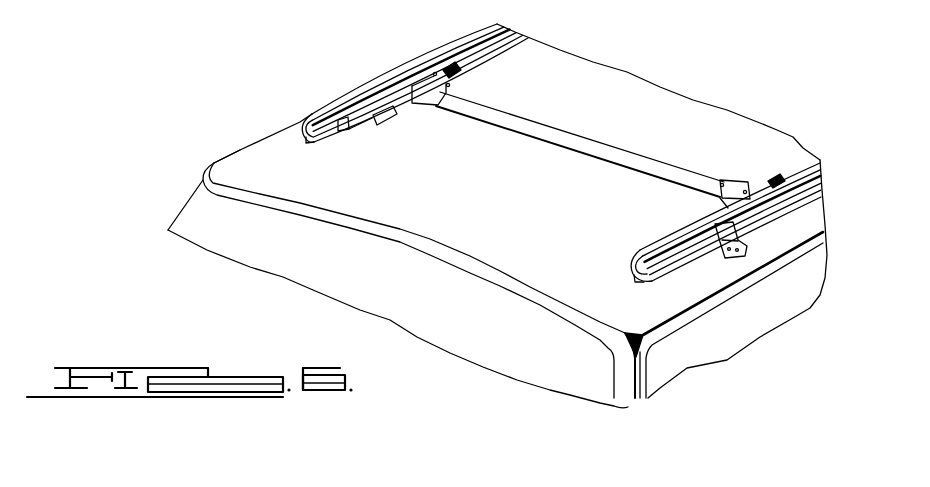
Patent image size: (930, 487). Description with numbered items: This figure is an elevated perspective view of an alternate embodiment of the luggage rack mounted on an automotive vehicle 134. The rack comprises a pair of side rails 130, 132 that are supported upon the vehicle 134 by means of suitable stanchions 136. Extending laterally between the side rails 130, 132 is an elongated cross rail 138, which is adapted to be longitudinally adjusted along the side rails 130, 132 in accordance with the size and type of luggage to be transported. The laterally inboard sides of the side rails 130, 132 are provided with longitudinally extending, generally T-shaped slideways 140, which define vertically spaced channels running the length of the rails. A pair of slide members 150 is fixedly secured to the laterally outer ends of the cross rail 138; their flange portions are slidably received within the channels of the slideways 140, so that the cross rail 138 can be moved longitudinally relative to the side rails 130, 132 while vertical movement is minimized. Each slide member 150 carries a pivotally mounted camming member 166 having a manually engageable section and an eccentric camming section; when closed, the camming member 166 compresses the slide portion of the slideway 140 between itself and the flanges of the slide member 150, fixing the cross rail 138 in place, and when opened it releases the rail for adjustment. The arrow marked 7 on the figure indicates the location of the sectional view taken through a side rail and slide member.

The side rail 130 is at (365, 93).
The side rail 132 is at (791, 208).
The automotive vehicle 134 is at (566, 323).
The stanchion 136 is at (387, 129).
The cross rail 138 is at (590, 155).
The slideway 140 is at (361, 134).
The slide member 150 is at (428, 101).
The camming member 166 is at (465, 72).
The section view indicator (FIG. 7) 7 is at (430, 4).